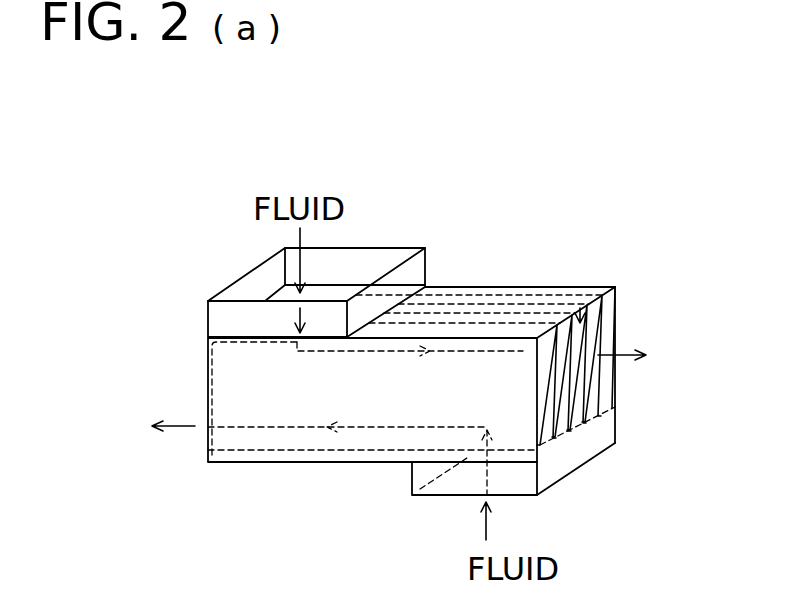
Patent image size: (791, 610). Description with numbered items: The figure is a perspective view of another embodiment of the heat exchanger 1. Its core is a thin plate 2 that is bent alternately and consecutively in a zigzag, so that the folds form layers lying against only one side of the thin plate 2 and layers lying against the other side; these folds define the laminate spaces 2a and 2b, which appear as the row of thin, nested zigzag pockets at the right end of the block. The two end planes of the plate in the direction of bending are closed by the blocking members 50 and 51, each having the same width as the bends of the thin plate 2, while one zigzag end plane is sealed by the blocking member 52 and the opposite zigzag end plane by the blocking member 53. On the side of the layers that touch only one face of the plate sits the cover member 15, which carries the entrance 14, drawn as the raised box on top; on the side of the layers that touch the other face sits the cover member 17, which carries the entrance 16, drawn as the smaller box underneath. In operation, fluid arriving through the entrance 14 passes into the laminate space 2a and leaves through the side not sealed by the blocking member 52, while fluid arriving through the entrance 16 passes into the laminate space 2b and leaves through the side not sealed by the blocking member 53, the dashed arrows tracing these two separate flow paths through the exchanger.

The heat exchanger 1 is at (115, 243).
The entrance 14 is at (380, 262).
The cover member 15 is at (498, 292).
The cover member 17 is at (298, 460).
The blocking member 52 is at (207, 359).
The blocking member 50 is at (237, 453).
The entrance 16 is at (432, 497).
The blocking member 51 is at (617, 297).
The blocking member 53 is at (566, 458).
The thin plate 2 is at (580, 308).
The laminate space 2a is at (595, 318).
The laminate space 2b is at (595, 420).